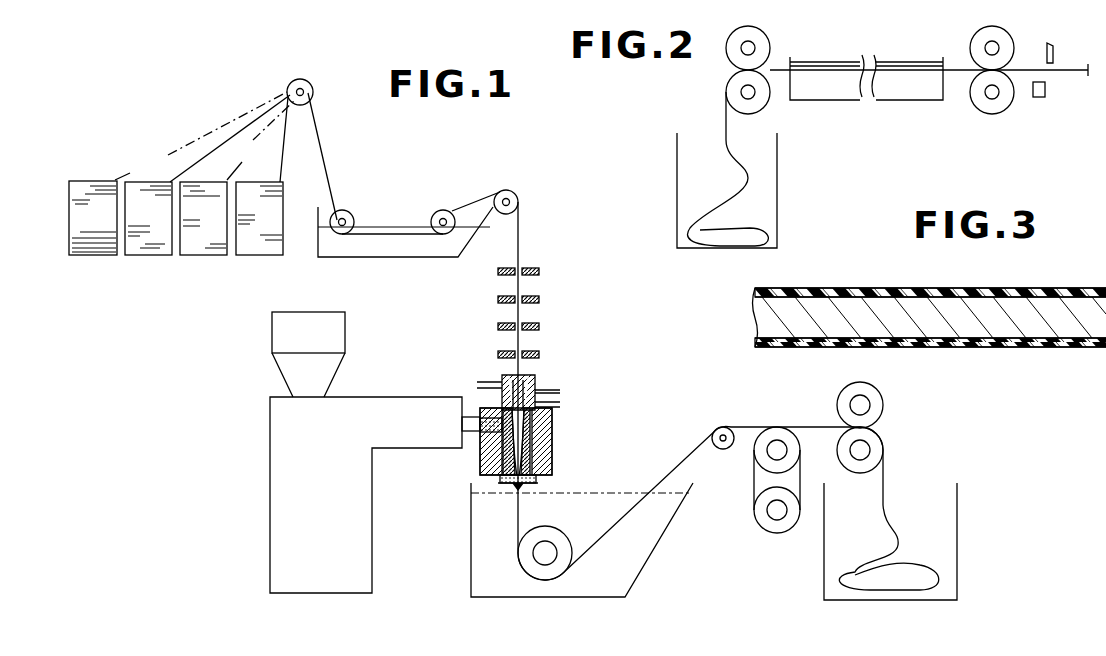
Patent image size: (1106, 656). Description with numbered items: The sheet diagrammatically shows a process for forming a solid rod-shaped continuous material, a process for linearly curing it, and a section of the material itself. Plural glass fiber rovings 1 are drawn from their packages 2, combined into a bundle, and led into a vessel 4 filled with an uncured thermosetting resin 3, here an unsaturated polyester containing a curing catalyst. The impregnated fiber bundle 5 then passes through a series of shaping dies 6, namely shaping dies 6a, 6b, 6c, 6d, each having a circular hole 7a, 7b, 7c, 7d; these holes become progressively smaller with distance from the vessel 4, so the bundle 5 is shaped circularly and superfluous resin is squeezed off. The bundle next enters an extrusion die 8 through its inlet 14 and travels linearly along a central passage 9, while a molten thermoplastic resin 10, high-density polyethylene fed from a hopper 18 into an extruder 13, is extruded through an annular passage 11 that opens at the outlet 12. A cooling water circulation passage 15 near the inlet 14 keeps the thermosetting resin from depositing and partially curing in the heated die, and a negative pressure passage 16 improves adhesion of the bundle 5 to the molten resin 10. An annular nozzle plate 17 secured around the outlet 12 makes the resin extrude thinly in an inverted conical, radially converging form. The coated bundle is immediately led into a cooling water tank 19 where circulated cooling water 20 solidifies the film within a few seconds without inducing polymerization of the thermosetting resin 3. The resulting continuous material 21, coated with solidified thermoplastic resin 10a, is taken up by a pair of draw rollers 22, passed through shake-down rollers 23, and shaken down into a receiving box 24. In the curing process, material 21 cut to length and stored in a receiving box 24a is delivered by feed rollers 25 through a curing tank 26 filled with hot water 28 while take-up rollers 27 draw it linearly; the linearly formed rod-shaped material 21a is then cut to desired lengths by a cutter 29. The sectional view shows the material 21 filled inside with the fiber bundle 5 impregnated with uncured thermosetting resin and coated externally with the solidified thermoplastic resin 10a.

In FIG. 1, the glass fiber rovings 1 is at (200, 138).
In FIG. 1, the packages 2 is at (104, 180).
In FIG. 1, the uncured thermosetting resin 3 is at (393, 224).
In FIG. 1, the vessel 4 is at (408, 256).
In FIG. 1, the fiber bundle 5 is at (520, 215).
In FIG. 3, the fiber bundle 5 is at (1040, 306).
In FIG. 1, the series of shaping dies 6 is at (563, 301).
In FIG. 1, the shaping die 6a is at (539, 268).
In FIG. 1, the shaping die 6b is at (539, 298).
In FIG. 1, the shaping die 6c is at (539, 325).
In FIG. 1, the shaping die 6d is at (539, 353).
In FIG. 1, the hole 7a is at (496, 276).
In FIG. 1, the hole 7b is at (496, 303).
In FIG. 1, the hole 7c is at (496, 330).
In FIG. 1, the hole 7d is at (496, 358).
In FIG. 1, the extrusion die 8 is at (552, 443).
In FIG. 1, the central passage 9 is at (552, 428).
In FIG. 1, the molten thermoplastic resin 10 is at (552, 464).
In FIG. 3, the solidified thermoplastic resin 10a is at (934, 293).
In FIG. 1, the annular passage 11 is at (478, 454).
In FIG. 1, the outlet 12 is at (538, 483).
In FIG. 1, the extruder 13 is at (385, 378).
In FIG. 1, the inlet 14 is at (533, 372).
In FIG. 1, the cooling water circulation passage 15 is at (560, 390).
In FIG. 1, the negative pressure passage 16 is at (560, 406).
In FIG. 1, the annular nozzle plate 17 is at (496, 483).
In FIG. 1, the hopper 18 is at (276, 330).
In FIG. 1, the cooling water tank 19 is at (473, 548).
In FIG. 1, the cooling water 20 is at (472, 577).
In FIG. 1, the continuous material 21 is at (754, 426).
In FIG. 2, the continuous material 21 is at (723, 112).
In FIG. 3, the continuous material 21 is at (880, 286).
In FIG. 2, the linearly formed rod-shaped material 21a is at (953, 60).
In FIG. 1, the draw rollers 22 is at (765, 525).
In FIG. 1, the shake-down rollers 23 is at (872, 408).
In FIG. 1, the receiving box 24 is at (957, 533).
In FIG. 2, the receiving box 24a is at (777, 184).
In FIG. 2, the feed rollers 25 is at (764, 64).
In FIG. 2, the curing tank 26 is at (888, 102).
In FIG. 2, the take-up rollers 27 is at (985, 42).
In FIG. 2, the hot water 28 is at (838, 100).
In FIG. 2, the cutter 29 is at (1053, 50).